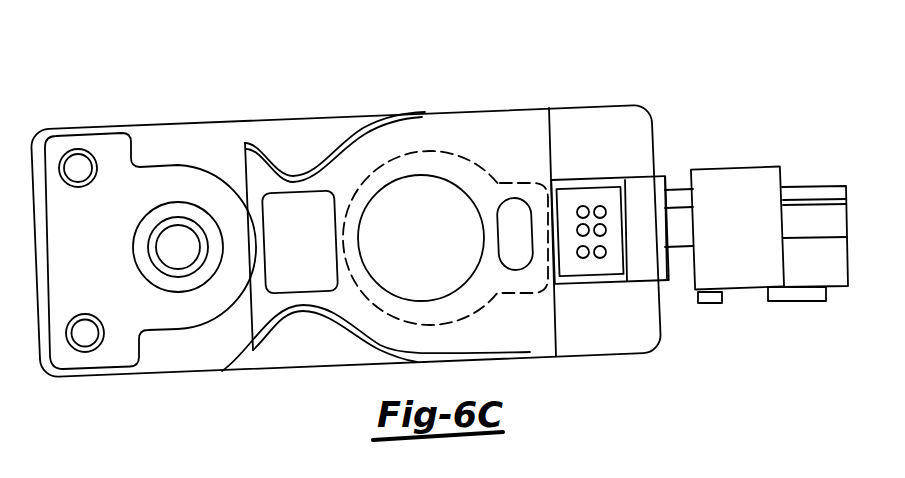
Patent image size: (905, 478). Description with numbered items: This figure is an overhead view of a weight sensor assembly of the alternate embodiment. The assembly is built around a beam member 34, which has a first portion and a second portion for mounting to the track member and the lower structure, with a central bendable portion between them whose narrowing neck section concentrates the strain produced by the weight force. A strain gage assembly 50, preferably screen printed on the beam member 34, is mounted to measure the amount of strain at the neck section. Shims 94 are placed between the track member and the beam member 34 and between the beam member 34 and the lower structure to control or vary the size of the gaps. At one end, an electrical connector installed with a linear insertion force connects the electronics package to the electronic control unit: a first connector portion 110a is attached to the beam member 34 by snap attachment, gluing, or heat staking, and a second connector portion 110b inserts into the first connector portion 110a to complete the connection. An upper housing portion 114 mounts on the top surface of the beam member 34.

The beam member 34 is at (377, 147).
The strain gage assembly 50 is at (297, 262).
The shims 94 is at (133, 312).
The upper housing portion 114 is at (635, 142).
The first connector portion 110a is at (642, 268).
The second connector portion 110b is at (785, 268).